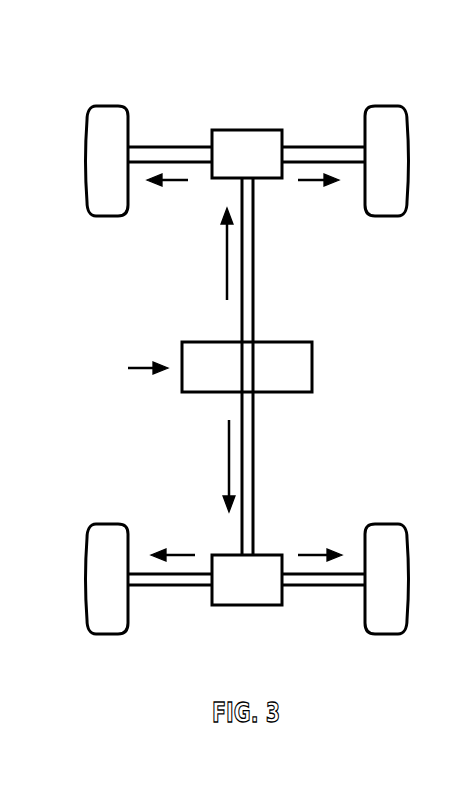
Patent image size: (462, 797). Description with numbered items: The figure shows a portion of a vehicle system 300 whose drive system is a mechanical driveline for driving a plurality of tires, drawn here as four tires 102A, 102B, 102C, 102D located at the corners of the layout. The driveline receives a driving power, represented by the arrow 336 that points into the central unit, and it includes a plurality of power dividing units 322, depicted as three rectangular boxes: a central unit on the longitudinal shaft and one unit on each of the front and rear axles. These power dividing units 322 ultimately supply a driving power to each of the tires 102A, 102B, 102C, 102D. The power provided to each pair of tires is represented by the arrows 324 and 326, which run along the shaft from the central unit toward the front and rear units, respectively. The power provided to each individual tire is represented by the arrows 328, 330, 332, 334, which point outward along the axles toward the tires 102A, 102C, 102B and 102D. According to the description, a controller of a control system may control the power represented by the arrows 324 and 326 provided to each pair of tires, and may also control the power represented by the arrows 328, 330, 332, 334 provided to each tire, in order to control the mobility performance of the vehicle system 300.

The vehicle system 300 is at (183, 66).
The tire 102A is at (98, 135).
The tire 102B is at (102, 567).
The tire 102C is at (385, 130).
The tire 102D is at (383, 547).
The power dividing unit 322 is at (255, 143).
The arrow representing power to a pair of tires 324 is at (227, 282).
The arrow representing power to a pair of tires 326 is at (229, 457).
The arrow representing power to a tire 328 is at (174, 182).
The arrow representing power to a tire 330 is at (315, 181).
The arrow representing power to a tire 332 is at (163, 552).
The arrow representing power to a tire 334 is at (318, 550).
The arrow representing driving power 336 is at (140, 368).